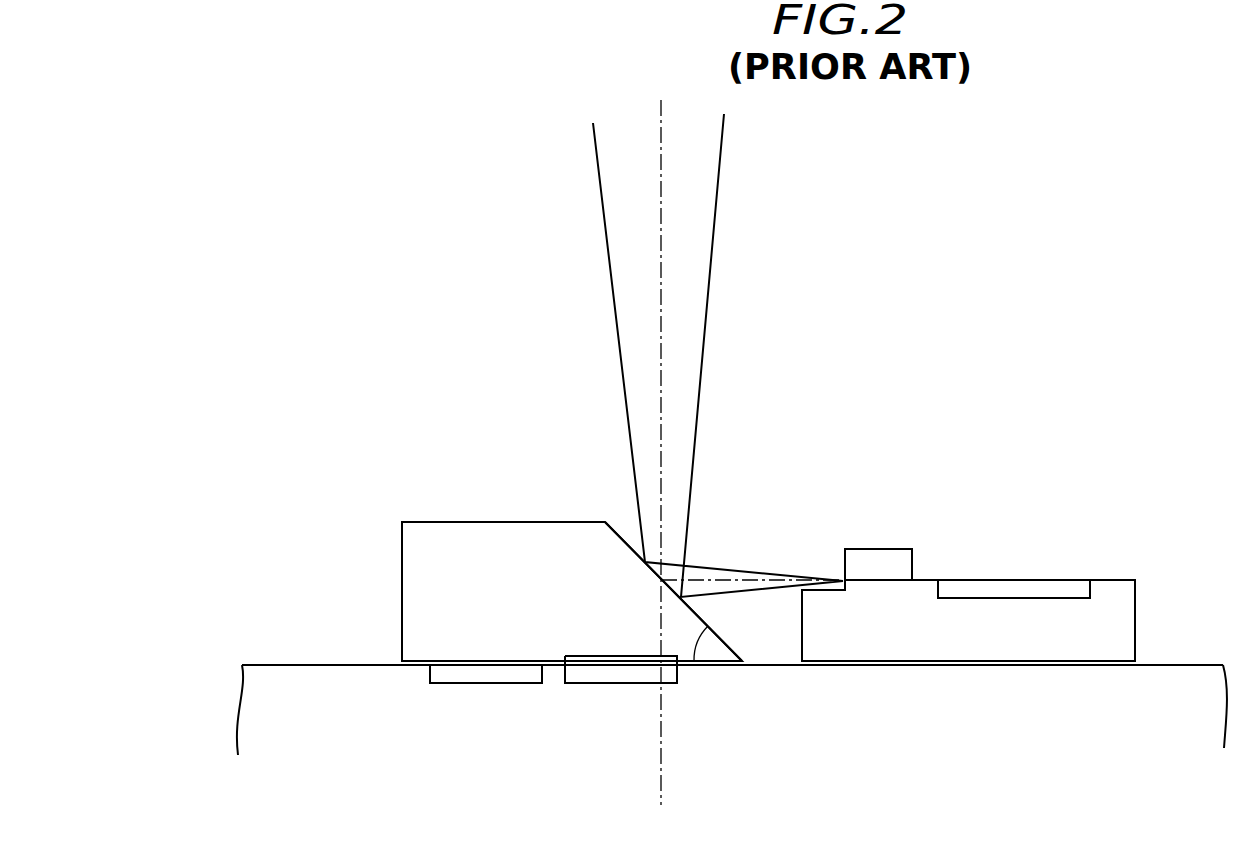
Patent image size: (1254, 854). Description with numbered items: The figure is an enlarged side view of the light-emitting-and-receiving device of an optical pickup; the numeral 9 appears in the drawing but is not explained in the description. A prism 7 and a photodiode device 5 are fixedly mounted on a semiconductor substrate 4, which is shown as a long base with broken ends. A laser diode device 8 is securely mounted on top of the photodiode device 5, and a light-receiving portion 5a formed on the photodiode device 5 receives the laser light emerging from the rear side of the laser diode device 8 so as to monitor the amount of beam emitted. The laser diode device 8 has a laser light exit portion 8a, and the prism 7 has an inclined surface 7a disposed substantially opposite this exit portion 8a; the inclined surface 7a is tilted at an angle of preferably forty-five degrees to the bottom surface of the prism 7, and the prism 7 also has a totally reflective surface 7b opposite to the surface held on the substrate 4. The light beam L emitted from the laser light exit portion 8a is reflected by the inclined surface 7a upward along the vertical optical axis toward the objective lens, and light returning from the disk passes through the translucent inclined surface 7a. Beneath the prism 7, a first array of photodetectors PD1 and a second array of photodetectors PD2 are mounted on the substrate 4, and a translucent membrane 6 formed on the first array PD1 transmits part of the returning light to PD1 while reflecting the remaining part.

The semiconductor substrate 4 is at (1157, 693).
The photodiode device 5 is at (1109, 610).
The light-receiving portion 5a is at (990, 585).
The translucent membrane 6 is at (578, 655).
The prism 7 is at (495, 538).
The inclined surface 7a is at (715, 643).
The totally reflective surface 7b is at (545, 520).
The laser diode device 8 is at (877, 555).
The laser light exit portion 8a is at (843, 560).
The optical pickup assembly 9 is at (420, 480).
The light beam L is at (667, 180).
The first array of photodetectors PD1 is at (628, 680).
The second array of photodetectors PD2 is at (483, 678).